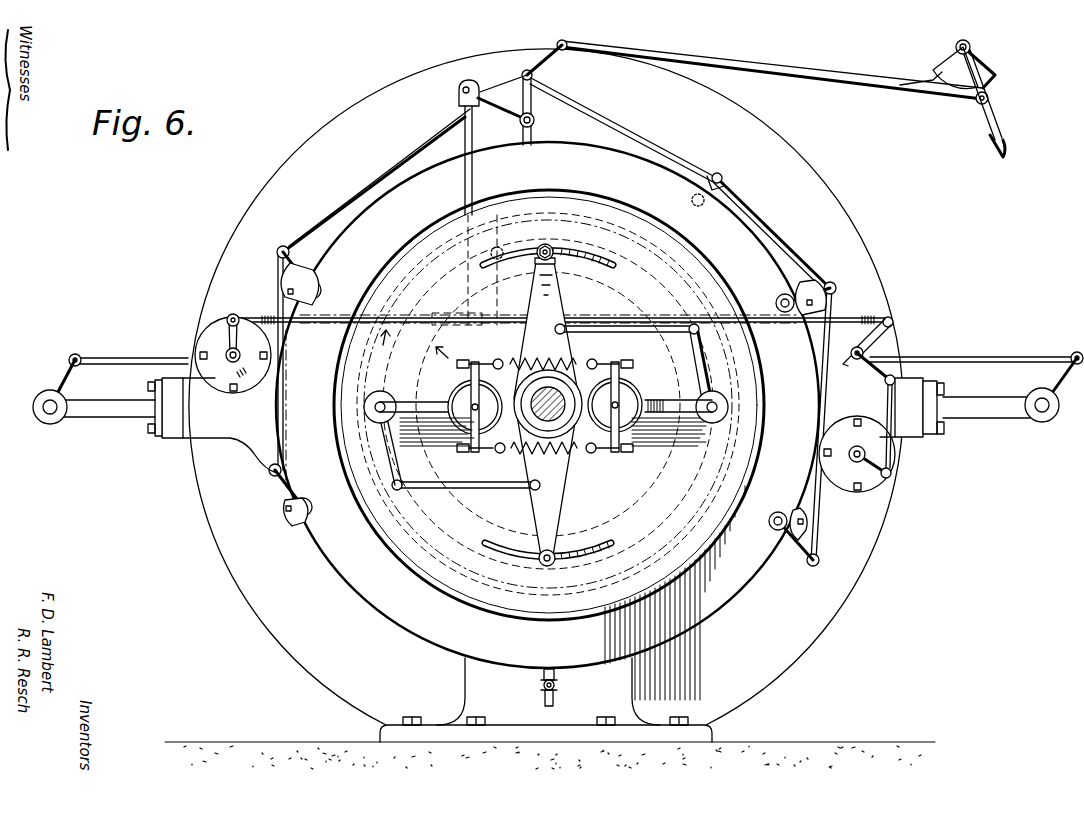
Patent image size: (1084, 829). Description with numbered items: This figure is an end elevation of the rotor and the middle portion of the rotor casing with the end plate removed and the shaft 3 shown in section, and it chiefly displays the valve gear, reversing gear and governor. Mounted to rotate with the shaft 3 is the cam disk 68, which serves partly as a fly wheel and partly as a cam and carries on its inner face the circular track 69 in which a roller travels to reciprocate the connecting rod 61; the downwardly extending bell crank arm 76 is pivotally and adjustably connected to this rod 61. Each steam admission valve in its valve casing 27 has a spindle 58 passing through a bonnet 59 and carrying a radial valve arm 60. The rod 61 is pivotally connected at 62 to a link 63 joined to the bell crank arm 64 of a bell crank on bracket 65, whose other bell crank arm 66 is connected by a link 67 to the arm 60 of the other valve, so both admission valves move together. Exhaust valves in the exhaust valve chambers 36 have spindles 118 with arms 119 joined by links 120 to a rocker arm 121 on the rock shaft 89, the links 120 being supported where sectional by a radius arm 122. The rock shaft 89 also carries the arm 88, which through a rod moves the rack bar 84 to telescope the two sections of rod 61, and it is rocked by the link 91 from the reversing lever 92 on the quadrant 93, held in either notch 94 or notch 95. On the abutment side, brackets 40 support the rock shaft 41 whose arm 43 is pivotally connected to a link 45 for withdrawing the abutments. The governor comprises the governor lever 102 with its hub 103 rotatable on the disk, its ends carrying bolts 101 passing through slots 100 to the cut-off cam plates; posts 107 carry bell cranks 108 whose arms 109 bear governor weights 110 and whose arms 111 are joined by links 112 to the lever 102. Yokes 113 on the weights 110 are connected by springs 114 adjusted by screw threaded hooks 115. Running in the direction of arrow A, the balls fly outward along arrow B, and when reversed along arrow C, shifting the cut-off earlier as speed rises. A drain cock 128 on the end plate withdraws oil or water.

The shaft 3 is at (560, 420).
The valve casing 27 is at (190, 350).
The exhaust valve chamber 36 is at (288, 280).
The bracket 40 is at (112, 418).
The rock shaft 41 is at (50, 414).
The arm 43 is at (70, 378).
The link 45 is at (118, 357).
The spindle 58 is at (230, 365).
The bonnet 59 is at (215, 335).
The valve arm 60 is at (232, 313).
The connecting rod 61 is at (330, 318).
The pivotal connection 62 is at (845, 320).
The link 63 is at (893, 317).
The bell crank arm 64 is at (905, 330).
The bracket 65 is at (855, 362).
The bell crank arm 66 is at (895, 355).
The link 67 is at (912, 440).
The cam disk 68 is at (668, 290).
The circular track 69 is at (435, 575).
The bell crank arm 76 is at (532, 300).
The rack bar 84 is at (465, 285).
The arm 88 is at (478, 92).
The rock shaft 89 is at (535, 121).
The link 91 is at (792, 78).
The reversing lever 92 is at (995, 118).
The quadrant 93 is at (960, 88).
The notch 94 is at (988, 95).
The notch 95 is at (918, 84).
The slot 100 is at (518, 250).
The bolt 101 is at (556, 248).
The governor lever 102 is at (563, 282).
The hub 103 is at (590, 360).
The post 107 is at (368, 420).
The bell crank 108 is at (364, 407).
The bell crank arm 109 is at (553, 432).
The governor weight 110 is at (478, 370).
The bell crank arm 111 is at (720, 370).
The link 112 is at (620, 328).
The yoke 113 is at (470, 430).
The spring 114 is at (556, 455).
The screw threaded hook 115 is at (462, 358).
The spindle 118 is at (322, 289).
The arm 119 is at (300, 256).
The link 120 is at (420, 170).
The rocker arm 121 is at (533, 98).
The radius arm 122 is at (724, 180).
The drain cock 128 is at (543, 686).
The arrow A is at (350, 372).
The arrow B is at (430, 380).
The arrow C is at (429, 429).